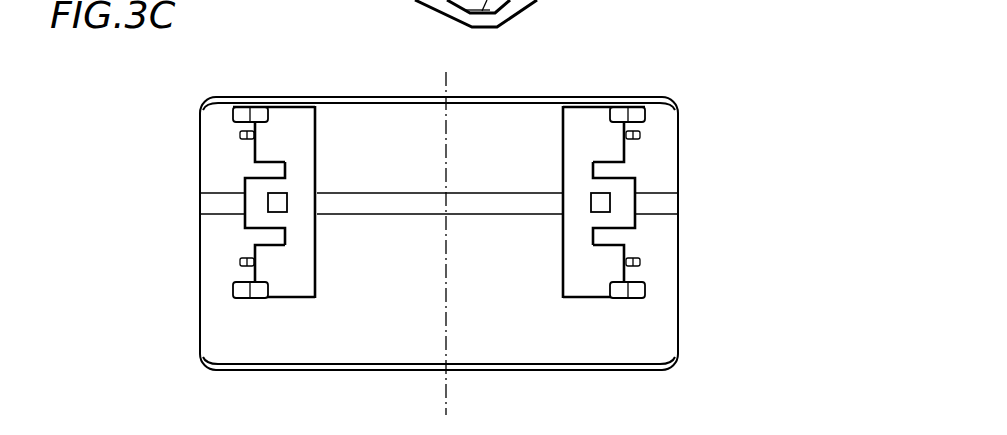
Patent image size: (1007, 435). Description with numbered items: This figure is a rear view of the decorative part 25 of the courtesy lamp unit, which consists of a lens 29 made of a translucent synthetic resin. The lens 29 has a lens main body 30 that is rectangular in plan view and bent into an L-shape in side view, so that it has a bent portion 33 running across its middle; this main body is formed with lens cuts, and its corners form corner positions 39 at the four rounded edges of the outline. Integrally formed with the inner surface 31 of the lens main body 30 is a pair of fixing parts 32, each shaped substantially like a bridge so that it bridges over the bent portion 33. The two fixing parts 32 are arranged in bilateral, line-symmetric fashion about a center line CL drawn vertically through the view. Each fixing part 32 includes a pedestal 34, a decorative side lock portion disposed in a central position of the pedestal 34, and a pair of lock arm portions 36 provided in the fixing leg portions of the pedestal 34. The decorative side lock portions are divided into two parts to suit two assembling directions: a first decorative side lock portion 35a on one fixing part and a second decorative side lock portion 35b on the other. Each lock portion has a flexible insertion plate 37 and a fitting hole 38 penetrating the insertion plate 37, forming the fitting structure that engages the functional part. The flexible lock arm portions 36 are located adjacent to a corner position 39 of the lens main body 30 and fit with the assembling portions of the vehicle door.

The decorative part 25 is at (178, 267).
The lens 29 is at (200, 293).
The lens main body 30 is at (340, 352).
The inner surface 31 is at (275, 352).
The fixing part 32 is at (318, 132).
The bent portion 33 is at (208, 205).
The pedestal 34 is at (304, 265).
The first decorative side lock portion 35a is at (241, 177).
The second decorative side lock portion 35b is at (640, 178).
The lock arm portion 36 is at (252, 112).
The insertion plate 37 is at (246, 217).
The fitting hole 38 is at (289, 203).
The corner position 39 is at (210, 101).
The center line CL is at (440, 338).